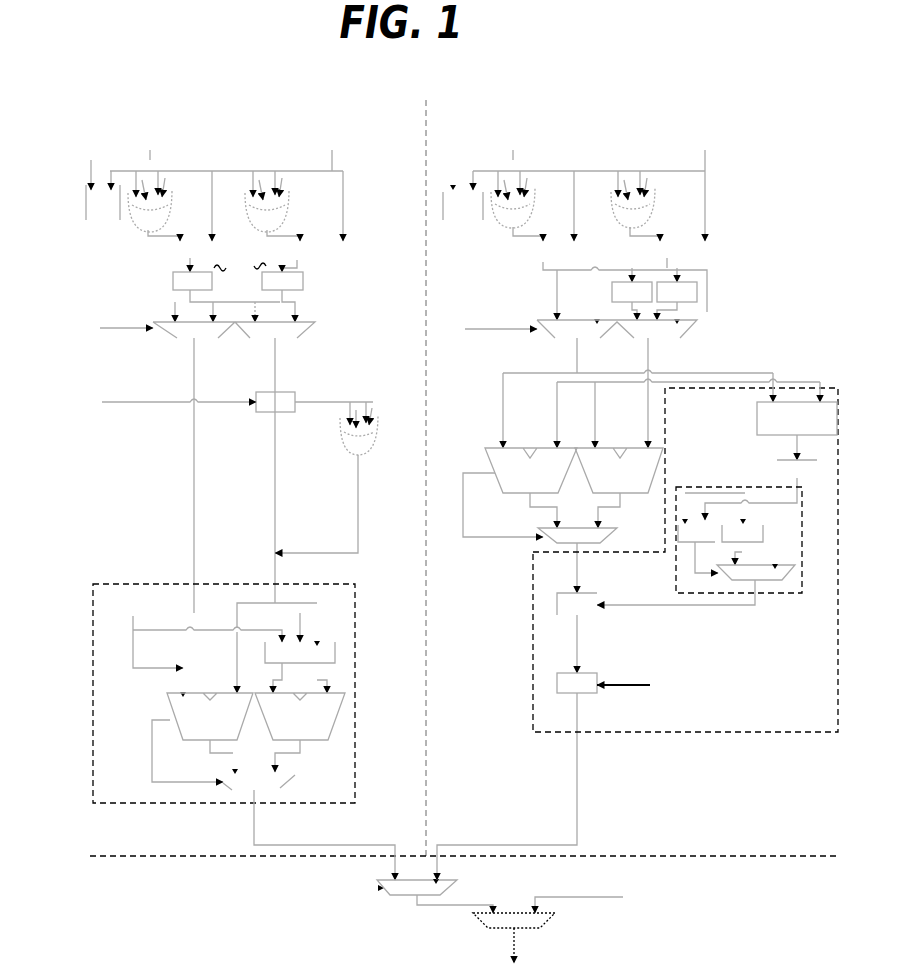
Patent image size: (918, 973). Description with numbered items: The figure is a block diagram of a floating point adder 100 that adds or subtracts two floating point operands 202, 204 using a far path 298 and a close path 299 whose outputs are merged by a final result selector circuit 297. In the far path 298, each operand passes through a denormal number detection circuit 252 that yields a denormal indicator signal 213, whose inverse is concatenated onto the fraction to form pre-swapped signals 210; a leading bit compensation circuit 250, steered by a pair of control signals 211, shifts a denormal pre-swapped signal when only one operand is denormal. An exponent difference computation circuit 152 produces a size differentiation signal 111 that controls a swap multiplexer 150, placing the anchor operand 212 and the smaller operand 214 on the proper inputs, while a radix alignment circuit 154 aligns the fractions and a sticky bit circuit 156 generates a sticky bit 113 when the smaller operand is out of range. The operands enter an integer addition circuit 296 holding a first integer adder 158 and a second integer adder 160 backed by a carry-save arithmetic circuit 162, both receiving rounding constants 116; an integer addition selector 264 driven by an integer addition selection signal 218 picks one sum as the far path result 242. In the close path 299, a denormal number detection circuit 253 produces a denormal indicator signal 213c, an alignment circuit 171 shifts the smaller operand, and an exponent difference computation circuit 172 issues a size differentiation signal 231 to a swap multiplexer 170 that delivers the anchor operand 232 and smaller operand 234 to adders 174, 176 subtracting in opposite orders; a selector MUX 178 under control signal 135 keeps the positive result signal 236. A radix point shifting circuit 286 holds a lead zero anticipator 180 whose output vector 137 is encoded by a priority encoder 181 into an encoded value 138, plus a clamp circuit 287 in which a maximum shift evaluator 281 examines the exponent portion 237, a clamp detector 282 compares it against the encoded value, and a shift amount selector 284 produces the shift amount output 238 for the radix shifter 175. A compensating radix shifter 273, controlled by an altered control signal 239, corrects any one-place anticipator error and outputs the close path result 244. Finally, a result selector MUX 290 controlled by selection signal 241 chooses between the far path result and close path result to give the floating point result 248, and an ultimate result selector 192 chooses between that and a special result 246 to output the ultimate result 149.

The floating point adder 100 is at (493, 33).
The first floating point operand 202 is at (407, 150).
The second floating point operand 204 is at (513, 150).
The exponent difference computation circuit 152 is at (103, 190).
The denormal number detection circuit 252 is at (208, 201).
The denormal indicator signal 213 is at (151, 238).
The pre-swapped signals 210 is at (445, 215).
The leading bit compensation circuit 250 is at (243, 266).
The control signals 211 is at (173, 281).
The size differentiation signal 111 is at (126, 319).
The swap multiplexer 150 is at (234, 320).
The radix alignment circuit 154 is at (207, 394).
The sticky bit circuit 156 is at (336, 428).
The anchor operand 212 is at (179, 475).
The smaller operand 214 is at (260, 470).
The sticky bit 113 is at (316, 504).
The rounding constants 116 is at (220, 644).
The carry-save arithmetic circuit 162 is at (300, 638).
The first integer adder 158 is at (217, 722).
The second integer adder 160 is at (300, 726).
The integer addition selection signal 218 is at (211, 772).
The integer addition selector 264 is at (259, 782).
The integer addition circuit 296 is at (224, 693).
The far path 298 is at (408, 478).
The close path 299 is at (441, 478).
The far path result 242 is at (324, 835).
The selection signal 241 is at (349, 888).
The result selector MUX 290 is at (417, 887).
The floating point result 248 is at (455, 900).
The special result 246 is at (579, 895).
The ultimate result selector 192 is at (514, 920).
The ultimate result 149 is at (530, 945).
The final result selector circuit 297 is at (464, 866).
The close path exponent difference computation circuit 172 is at (463, 195).
The close path denormal number detection circuit 253 is at (573, 199).
The close path denormal indicator signal 213c is at (508, 236).
The alignment circuit 171 is at (700, 278).
The close path size differentiation signal 231 is at (501, 321).
The close path swap multiplexer 170 is at (617, 310).
The close path anchor operand 232 is at (638, 393).
The close path smaller operand 234 is at (688, 393).
The first close path integer adder 174 is at (531, 488).
The second close path integer adder 176 is at (619, 488).
The control signal 135 is at (503, 505).
The selector MUX 178 is at (577, 535).
The result signal 236 is at (593, 568).
The lead zero anticipator 180 is at (797, 404).
The LZA output vector 137 is at (784, 447).
The priority encoder 181 is at (797, 469).
The encoded value 138 is at (767, 499).
The clamp circuit 287 is at (688, 487).
The exponent portion 237 is at (739, 528).
The clamp detector 282 is at (698, 546).
The maximum shift evaluator 281 is at (742, 542).
The shift amount selector 284 is at (756, 572).
The shift amount output 238 is at (676, 600).
The radix shifter 175 is at (553, 605).
The compensating radix shifter 273 is at (555, 685).
The compensating shifter control signal 239 is at (637, 683).
The radix point shifting circuit 286 is at (685, 560).
The close path result 244 is at (507, 786).